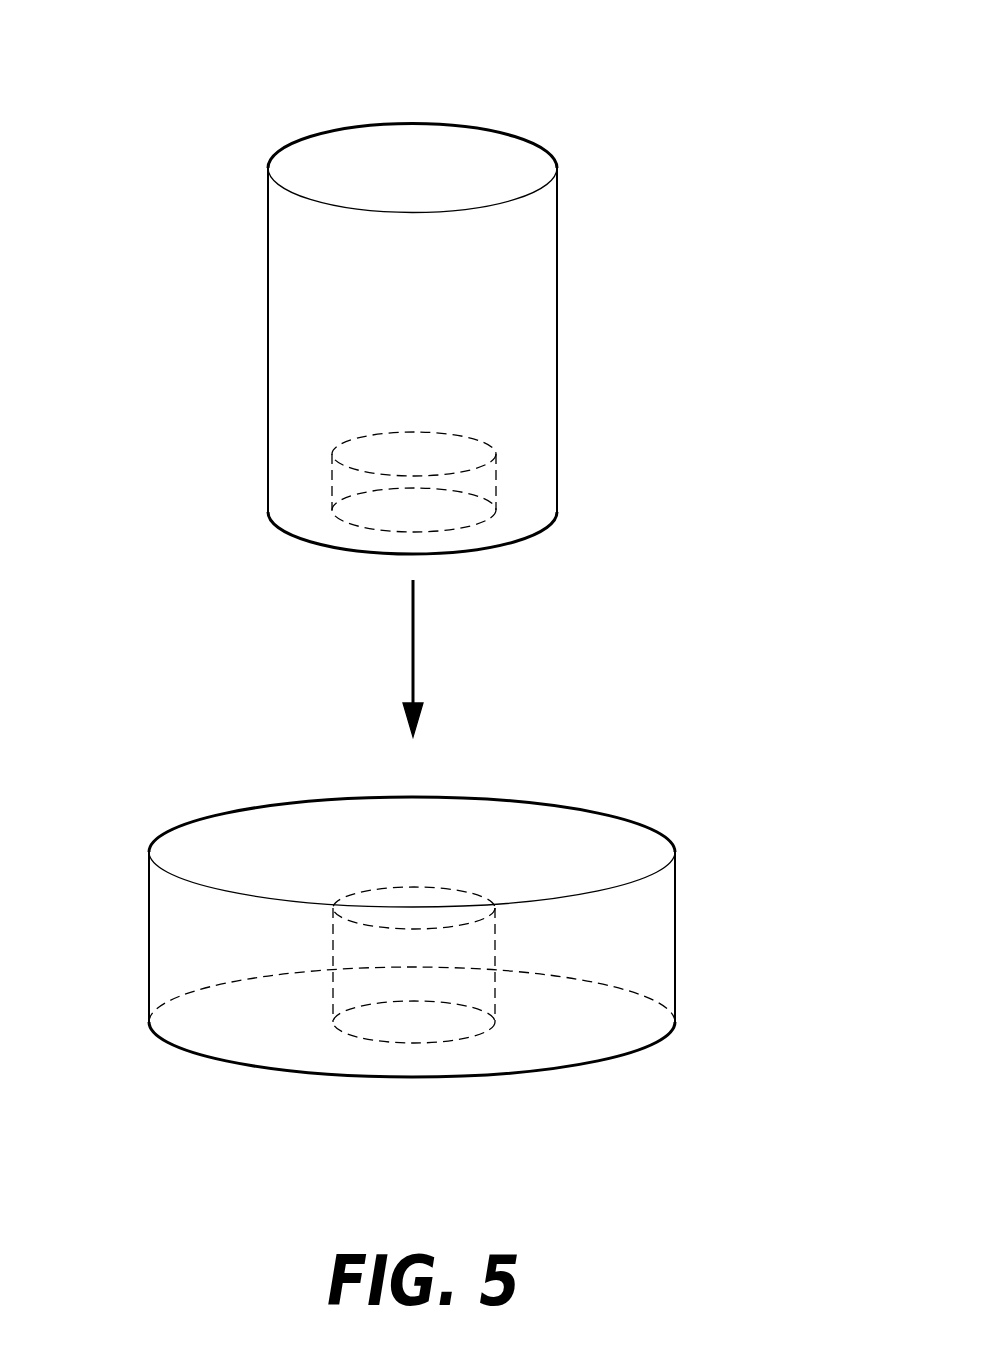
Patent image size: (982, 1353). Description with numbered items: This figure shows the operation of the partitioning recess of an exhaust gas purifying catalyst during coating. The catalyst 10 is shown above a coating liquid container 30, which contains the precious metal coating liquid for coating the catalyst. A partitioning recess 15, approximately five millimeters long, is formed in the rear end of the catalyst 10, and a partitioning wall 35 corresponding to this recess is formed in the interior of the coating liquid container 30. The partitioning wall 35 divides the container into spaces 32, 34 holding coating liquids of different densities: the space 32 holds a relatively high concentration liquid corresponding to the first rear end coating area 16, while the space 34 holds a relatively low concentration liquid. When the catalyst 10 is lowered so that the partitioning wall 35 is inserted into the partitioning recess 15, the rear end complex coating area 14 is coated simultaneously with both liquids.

The catalyst 10 is at (517, 135).
The rear end complex coating area 14 is at (353, 512).
The partitioning recess 15 is at (503, 475).
The first rear end coating area 16 is at (300, 505).
The coating liquid container 30 is at (603, 830).
The space 32 is at (467, 960).
The space 34 is at (232, 1023).
The partitioning wall 35 is at (385, 890).